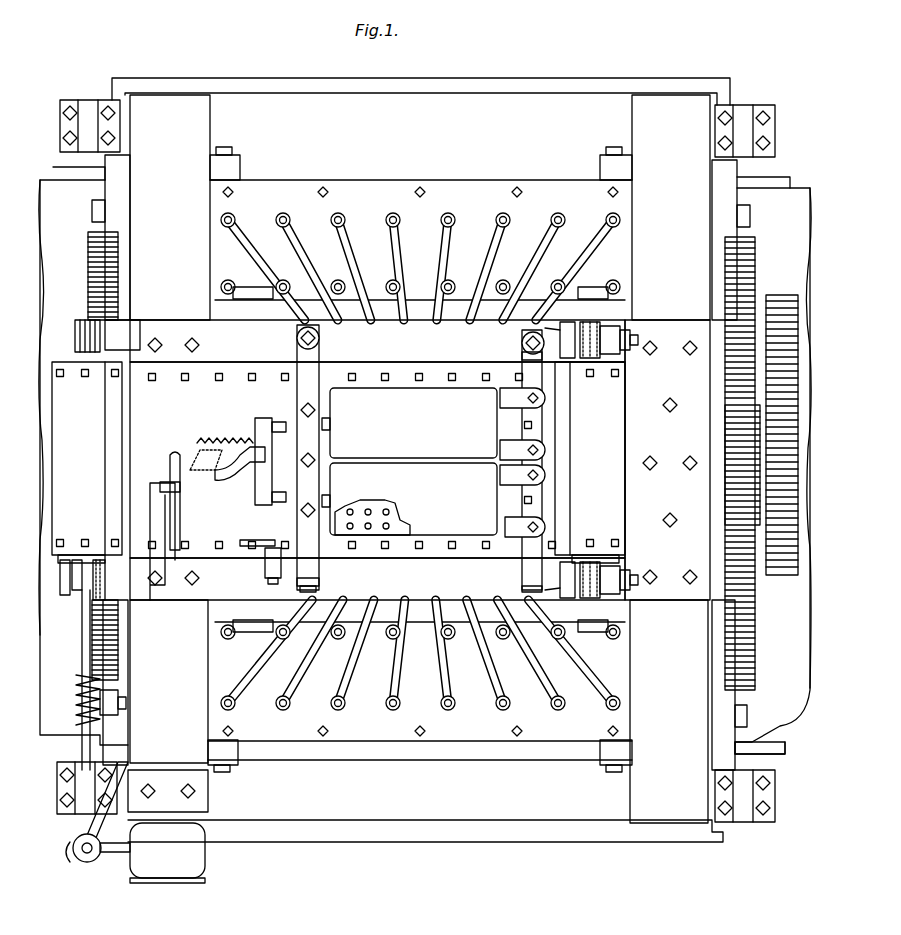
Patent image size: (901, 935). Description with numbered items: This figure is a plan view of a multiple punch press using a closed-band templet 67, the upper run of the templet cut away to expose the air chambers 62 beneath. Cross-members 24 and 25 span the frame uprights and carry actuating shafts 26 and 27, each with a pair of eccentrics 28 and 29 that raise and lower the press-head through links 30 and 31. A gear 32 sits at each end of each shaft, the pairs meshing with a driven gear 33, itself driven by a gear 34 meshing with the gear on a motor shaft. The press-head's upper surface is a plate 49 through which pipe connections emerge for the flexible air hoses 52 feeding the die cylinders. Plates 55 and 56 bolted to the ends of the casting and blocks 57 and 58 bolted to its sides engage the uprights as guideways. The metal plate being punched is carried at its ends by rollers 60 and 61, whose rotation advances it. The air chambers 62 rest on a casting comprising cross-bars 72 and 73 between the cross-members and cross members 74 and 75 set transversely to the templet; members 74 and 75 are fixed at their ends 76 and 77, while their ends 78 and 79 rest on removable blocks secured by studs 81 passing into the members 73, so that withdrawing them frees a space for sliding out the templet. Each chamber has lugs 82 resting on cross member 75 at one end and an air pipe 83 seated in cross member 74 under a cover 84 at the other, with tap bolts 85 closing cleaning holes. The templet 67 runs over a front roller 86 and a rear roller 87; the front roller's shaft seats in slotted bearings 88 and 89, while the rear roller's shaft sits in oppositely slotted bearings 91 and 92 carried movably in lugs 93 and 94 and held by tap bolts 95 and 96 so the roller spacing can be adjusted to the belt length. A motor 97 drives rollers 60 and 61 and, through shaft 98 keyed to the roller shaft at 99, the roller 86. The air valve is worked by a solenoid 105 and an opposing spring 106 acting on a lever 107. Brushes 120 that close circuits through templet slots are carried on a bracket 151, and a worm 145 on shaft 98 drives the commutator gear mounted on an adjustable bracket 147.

The cross-member 24 is at (670, 642).
The cross-member 25 is at (170, 652).
The actuating shaft 26 is at (418, 625).
The actuating shaft 27 is at (410, 300).
The eccentric 28 is at (540, 300).
The eccentric 29 is at (296, 276).
The link 30 is at (590, 300).
The link 31 is at (248, 288).
The gear 32 is at (88, 255).
The driven gear 33 is at (725, 430).
The gear 34 is at (785, 570).
The plate 49 is at (383, 186).
The flexible air connection or hose 52 is at (390, 676).
The plate 55 is at (120, 198).
The plate 56 is at (122, 733).
The block of metal 57 is at (240, 165).
The block of metal 58 is at (600, 165).
The roller 60 is at (68, 748).
The roller 61 is at (778, 731).
The air chamber 62 is at (409, 461).
The templet 67 is at (377, 460).
The cross-bar 72 is at (377, 579).
The cross-bar 73 is at (377, 341).
The cross member 74 is at (310, 580).
The cross member 75 is at (520, 548).
The end 76 is at (302, 592).
The end 77 is at (530, 572).
The end 78 is at (316, 352).
The end 79 is at (522, 348).
The bolt or stud 81 is at (300, 335).
The lug 82 is at (498, 405).
The air pipe 83 is at (285, 440).
The cover 84 is at (322, 444).
The tap bolt 85 is at (412, 517).
The roller 86 is at (118, 403).
The roller 87 is at (565, 450).
The slotted bearing 88 is at (78, 596).
The slotted bearing 89 is at (76, 322).
The bearing 91 is at (560, 330).
The bearing 92 is at (560, 588).
The lug 93 is at (620, 326).
The lug 94 is at (635, 588).
The tap bolt 95 is at (638, 334).
The tap bolt 96 is at (628, 578).
The motor 97 is at (205, 858).
The shaft 98 is at (82, 631).
The key connection 99 is at (105, 582).
The solenoid 105 is at (222, 478).
The spring 106 is at (238, 450).
The lever 107 is at (250, 466).
The brushes 120 is at (265, 540).
The worm 145 is at (76, 712).
The bracket 147 is at (128, 702).
The bracket 151 is at (265, 566).